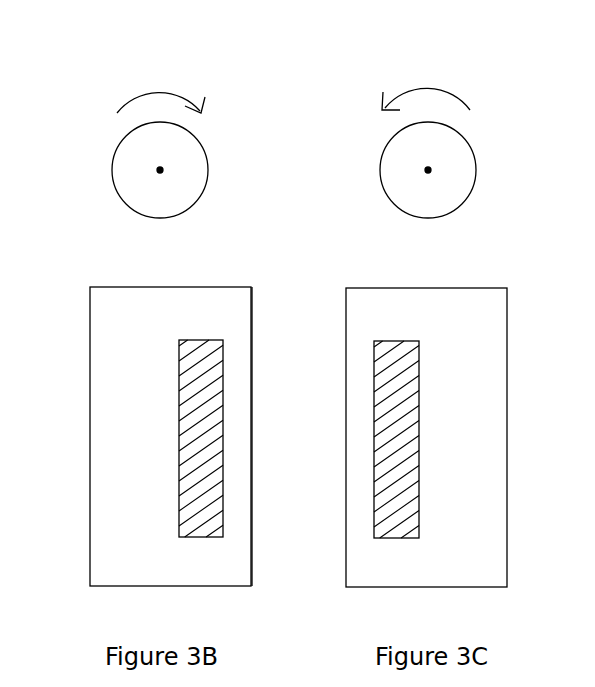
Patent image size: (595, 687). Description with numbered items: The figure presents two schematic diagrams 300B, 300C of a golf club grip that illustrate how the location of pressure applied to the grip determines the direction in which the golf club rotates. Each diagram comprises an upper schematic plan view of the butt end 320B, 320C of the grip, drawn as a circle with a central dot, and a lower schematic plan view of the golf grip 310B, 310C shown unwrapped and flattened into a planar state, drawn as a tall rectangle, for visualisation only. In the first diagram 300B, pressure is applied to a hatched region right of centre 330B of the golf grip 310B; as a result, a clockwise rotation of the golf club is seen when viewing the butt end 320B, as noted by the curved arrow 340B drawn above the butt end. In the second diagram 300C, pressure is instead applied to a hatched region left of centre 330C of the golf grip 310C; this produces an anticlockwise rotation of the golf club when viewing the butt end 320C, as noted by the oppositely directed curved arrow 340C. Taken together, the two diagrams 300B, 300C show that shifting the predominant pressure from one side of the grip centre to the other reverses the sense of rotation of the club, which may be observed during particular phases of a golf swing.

In FIG. 3B, the schematic diagram 300B is at (97, 92).
In FIG. 3B, the golf grip 310B is at (90, 442).
In FIG. 3B, the butt end 320B is at (113, 161).
In FIG. 3B, the region right of centre 330B is at (207, 383).
In FIG. 3B, the arrow 340B is at (170, 92).
In FIG. 3C, the schematic diagram 300C is at (342, 88).
In FIG. 3C, the golf grip 310C is at (507, 355).
In FIG. 3C, the butt end 320C is at (379, 166).
In FIG. 3C, the region left of centre 330C is at (382, 453).
In FIG. 3C, the arrow 340C is at (435, 87).